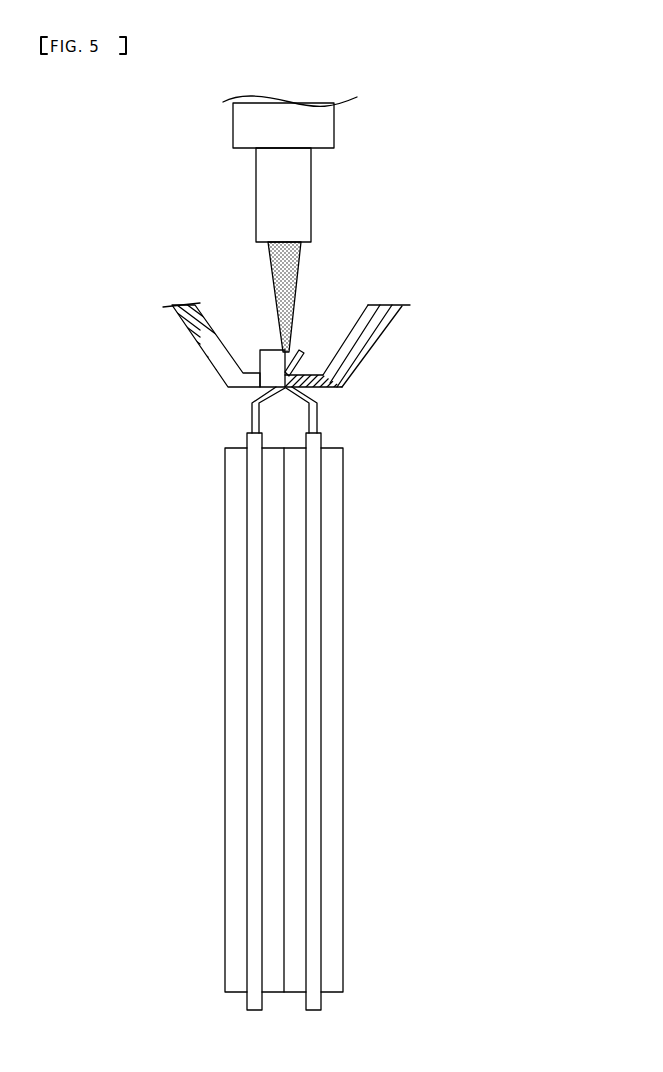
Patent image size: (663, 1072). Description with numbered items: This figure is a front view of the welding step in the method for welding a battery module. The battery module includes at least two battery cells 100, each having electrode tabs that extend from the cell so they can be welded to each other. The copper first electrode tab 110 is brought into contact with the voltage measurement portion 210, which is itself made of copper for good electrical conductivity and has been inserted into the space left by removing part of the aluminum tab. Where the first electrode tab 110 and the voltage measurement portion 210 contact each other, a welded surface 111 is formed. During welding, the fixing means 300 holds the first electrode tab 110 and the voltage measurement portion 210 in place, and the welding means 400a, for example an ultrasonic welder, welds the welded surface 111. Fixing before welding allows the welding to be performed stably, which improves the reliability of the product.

The battery cell 100 is at (237, 570).
The first electrode tab 110 is at (302, 348).
The welded surface 111 is at (333, 384).
The voltage measurement portion 210 is at (273, 363).
The fixing means 300 is at (197, 335).
The welding means 400a is at (265, 195).